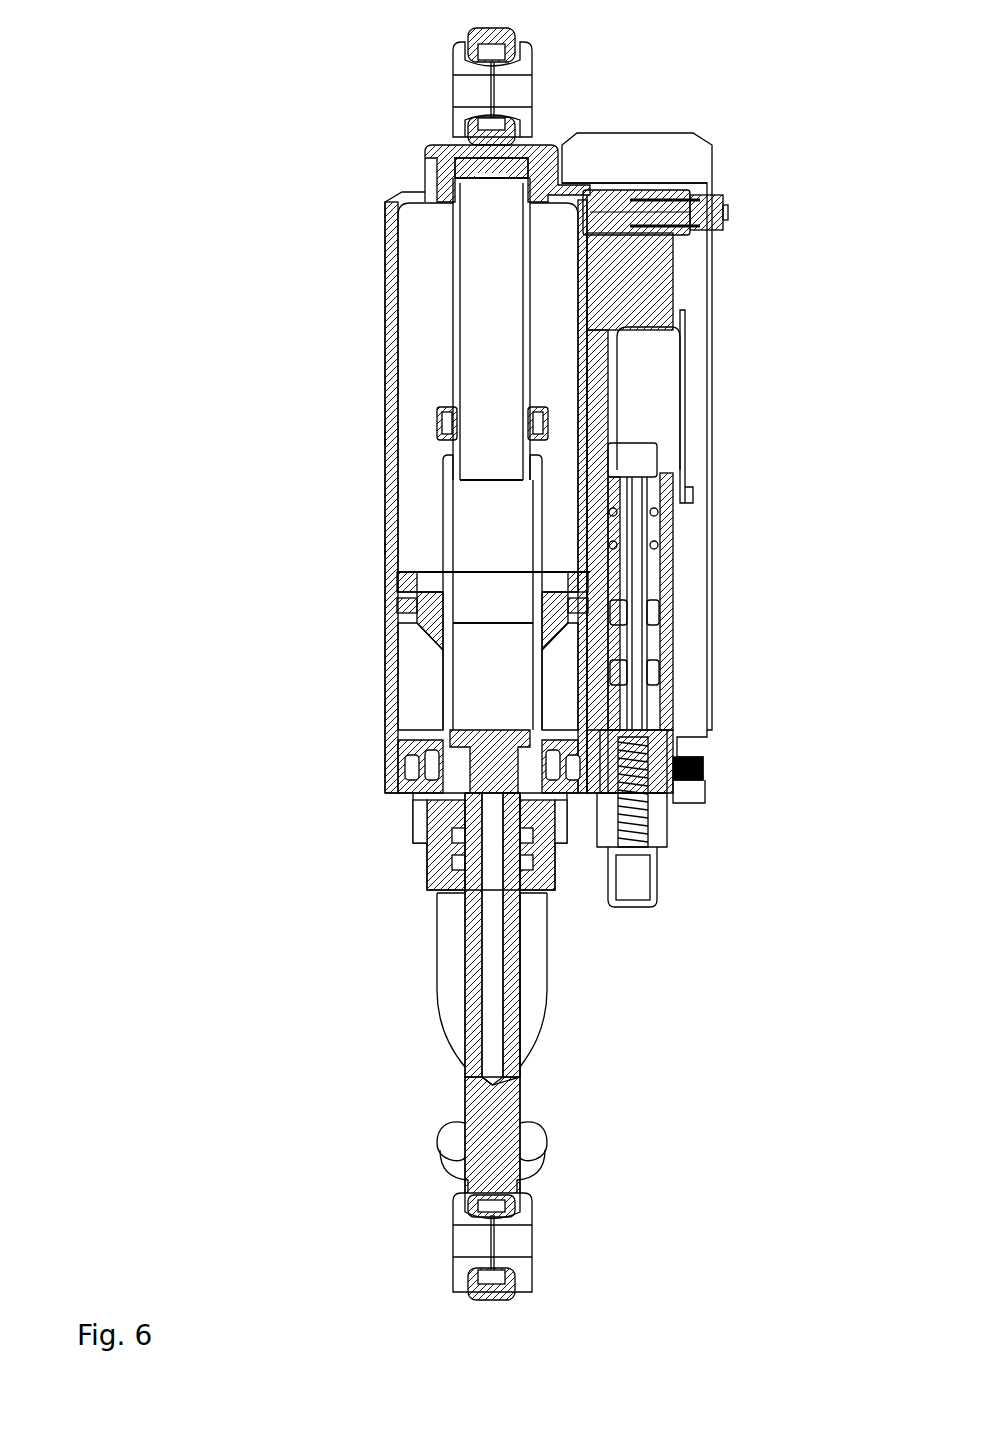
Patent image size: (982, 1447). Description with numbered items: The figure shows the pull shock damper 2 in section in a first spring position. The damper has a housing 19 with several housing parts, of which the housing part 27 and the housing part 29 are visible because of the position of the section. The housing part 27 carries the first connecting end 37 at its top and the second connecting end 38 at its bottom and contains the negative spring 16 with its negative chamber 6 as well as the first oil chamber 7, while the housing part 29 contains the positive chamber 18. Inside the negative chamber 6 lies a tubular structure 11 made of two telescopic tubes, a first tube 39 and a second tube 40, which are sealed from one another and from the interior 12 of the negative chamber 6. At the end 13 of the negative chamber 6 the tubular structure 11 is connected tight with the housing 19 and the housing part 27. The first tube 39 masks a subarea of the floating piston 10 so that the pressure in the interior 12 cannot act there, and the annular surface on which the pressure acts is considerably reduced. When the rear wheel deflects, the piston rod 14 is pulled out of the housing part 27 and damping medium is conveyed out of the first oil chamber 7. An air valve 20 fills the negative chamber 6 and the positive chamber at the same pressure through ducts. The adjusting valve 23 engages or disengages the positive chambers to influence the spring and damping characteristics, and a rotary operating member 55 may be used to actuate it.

The pull shock damper 2 is at (275, 105).
The first connecting end 37 is at (540, 45).
The end 13 is at (436, 146).
The tubular structure 11 is at (396, 198).
The air valve 20 is at (727, 192).
The negative chamber 6 is at (420, 255).
The first tube 39 is at (517, 232).
The interior 12 is at (425, 320).
The housing part 29 is at (715, 310).
The housing 19 is at (380, 436).
The negative spring 16 is at (430, 483).
The second tube 40 is at (528, 523).
The housing part 27 is at (392, 548).
The positive chamber 18 is at (695, 573).
The floating piston 10 is at (395, 632).
The first oil chamber 7 is at (420, 660).
The adjusting valve 23 is at (672, 690).
The operating member 55 is at (628, 912).
The piston rod 14 is at (520, 1120).
The second connecting end 38 is at (545, 1275).